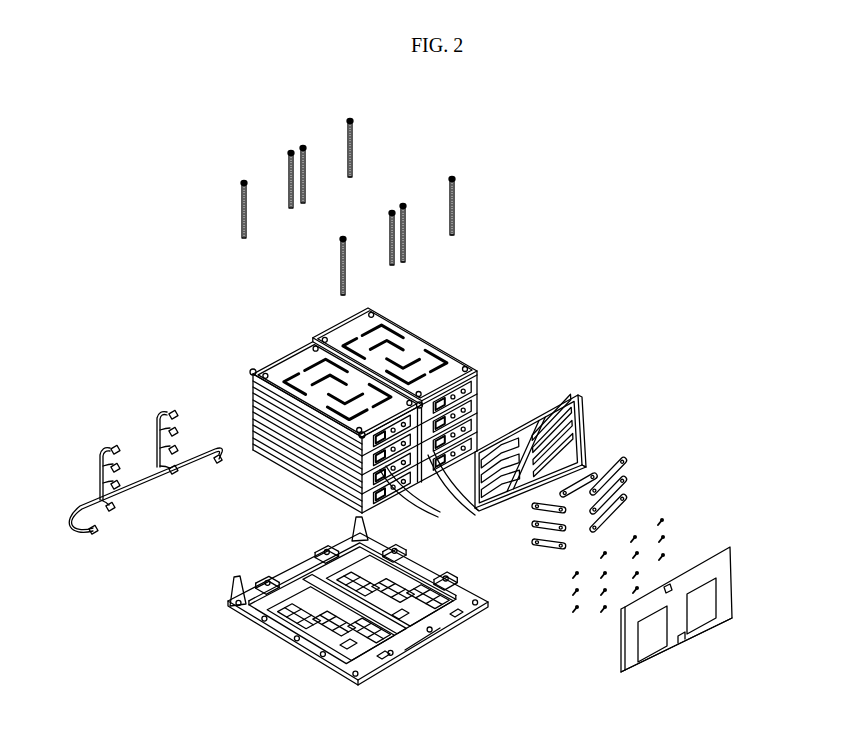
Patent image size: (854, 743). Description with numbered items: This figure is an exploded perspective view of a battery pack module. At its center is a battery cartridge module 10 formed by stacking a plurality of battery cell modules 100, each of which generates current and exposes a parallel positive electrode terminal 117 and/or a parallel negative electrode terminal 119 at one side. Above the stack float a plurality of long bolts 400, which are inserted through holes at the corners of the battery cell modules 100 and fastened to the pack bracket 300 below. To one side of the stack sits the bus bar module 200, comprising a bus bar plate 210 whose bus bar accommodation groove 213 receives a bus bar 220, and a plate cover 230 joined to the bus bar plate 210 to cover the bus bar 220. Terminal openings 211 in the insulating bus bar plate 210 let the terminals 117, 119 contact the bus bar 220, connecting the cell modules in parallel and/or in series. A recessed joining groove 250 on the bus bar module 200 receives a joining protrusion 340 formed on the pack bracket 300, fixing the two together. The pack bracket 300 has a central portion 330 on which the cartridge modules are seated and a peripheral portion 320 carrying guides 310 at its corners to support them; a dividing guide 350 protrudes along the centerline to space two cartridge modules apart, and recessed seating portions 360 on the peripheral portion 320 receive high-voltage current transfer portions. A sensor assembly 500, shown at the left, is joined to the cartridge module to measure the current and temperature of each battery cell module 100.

The battery cartridge module 10 is at (329, 418).
The battery cell module 100 is at (257, 385).
The parallel positive electrode terminal 117 is at (458, 490).
The parallel negative electrode terminal 119 is at (410, 499).
The bus bar module 200 is at (617, 537).
The bus bar plate 210 is at (564, 445).
The terminal opening 211 is at (540, 437).
The bus bar accommodation groove 213 is at (487, 456).
The bus bar 220 is at (646, 470).
The plate cover 230 is at (678, 598).
The joining groove 250 is at (682, 648).
The pack bracket 300 is at (343, 610).
The guide 310 is at (352, 527).
The peripheral portion 320 is at (285, 633).
The central portion 330 is at (360, 633).
The joining protrusion 340 is at (438, 656).
The dividing guide 350 is at (298, 576).
The seating portion 360 is at (390, 659).
The long bolt 400 is at (472, 186).
The sensor assembly 500 is at (84, 479).